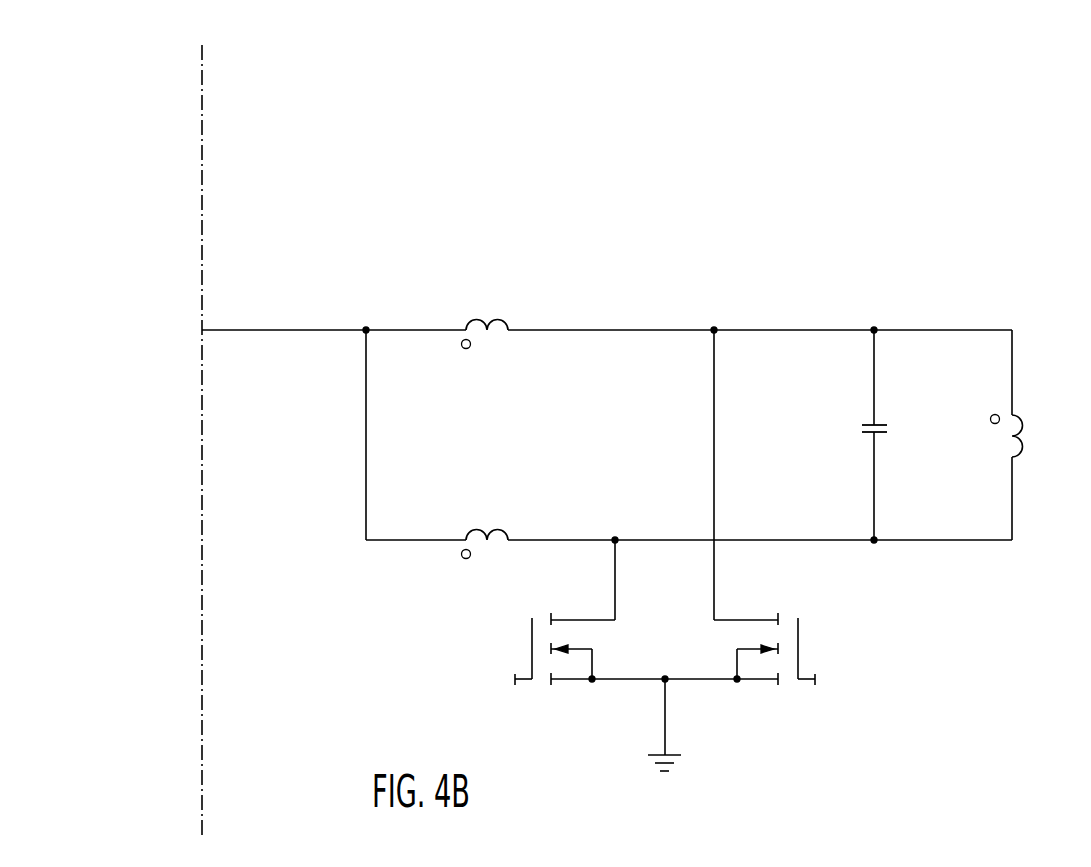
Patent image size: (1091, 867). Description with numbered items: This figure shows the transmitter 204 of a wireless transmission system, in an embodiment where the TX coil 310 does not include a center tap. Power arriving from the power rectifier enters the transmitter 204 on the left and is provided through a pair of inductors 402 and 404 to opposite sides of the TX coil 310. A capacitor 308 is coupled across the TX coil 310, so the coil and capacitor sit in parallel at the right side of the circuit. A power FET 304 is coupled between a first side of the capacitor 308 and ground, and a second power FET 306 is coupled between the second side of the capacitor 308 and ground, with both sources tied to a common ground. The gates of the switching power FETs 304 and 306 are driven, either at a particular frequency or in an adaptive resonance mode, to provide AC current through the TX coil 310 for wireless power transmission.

The transmitter 204 is at (557, 434).
The inductor 402 is at (486, 312).
The inductor 404 is at (486, 520).
The power FET 304 is at (540, 686).
The power FET 306 is at (792, 686).
The capacitor 308 is at (857, 429).
The TX coil 310 is at (1000, 437).